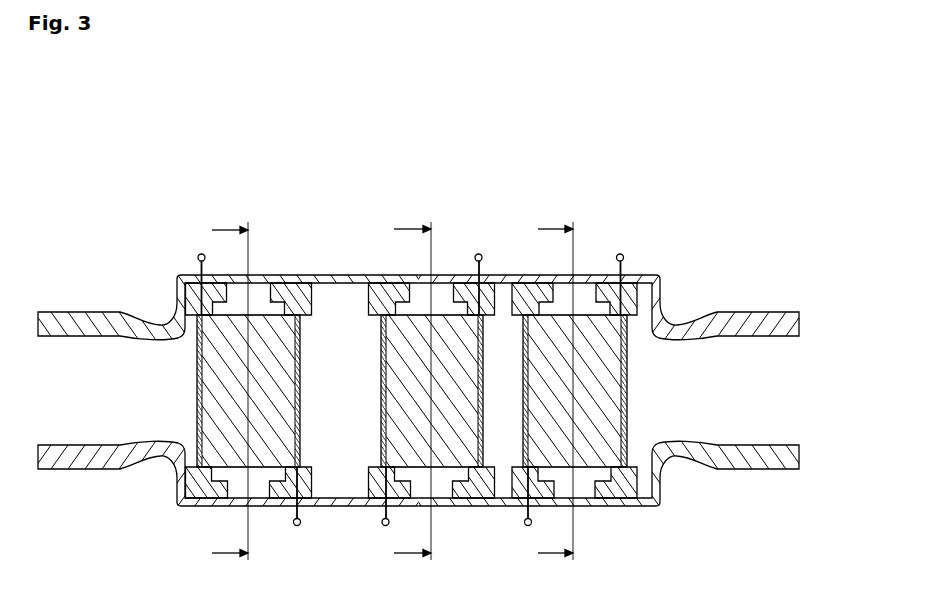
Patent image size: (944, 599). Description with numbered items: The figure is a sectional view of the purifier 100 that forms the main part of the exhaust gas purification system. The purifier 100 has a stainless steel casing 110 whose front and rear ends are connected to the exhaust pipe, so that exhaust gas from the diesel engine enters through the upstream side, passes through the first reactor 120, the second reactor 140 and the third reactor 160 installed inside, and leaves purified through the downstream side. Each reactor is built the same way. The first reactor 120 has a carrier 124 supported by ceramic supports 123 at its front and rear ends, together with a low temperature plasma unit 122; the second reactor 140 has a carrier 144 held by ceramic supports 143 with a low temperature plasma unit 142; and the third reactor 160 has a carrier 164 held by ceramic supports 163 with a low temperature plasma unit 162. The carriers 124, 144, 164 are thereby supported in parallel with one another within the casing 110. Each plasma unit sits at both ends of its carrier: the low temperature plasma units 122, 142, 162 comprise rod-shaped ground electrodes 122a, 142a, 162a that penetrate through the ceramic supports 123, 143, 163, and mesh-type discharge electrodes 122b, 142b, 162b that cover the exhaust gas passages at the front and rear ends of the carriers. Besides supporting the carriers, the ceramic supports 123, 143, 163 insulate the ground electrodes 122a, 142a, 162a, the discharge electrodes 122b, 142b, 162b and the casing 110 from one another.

The purifier 100 is at (758, 175).
The casing 110 is at (757, 466).
The first reactor 120 is at (178, 349).
The low temperature plasma unit 122 is at (108, 208).
The ground electrode 122a is at (199, 255).
The discharge electrode 122b is at (199, 314).
The ceramic support 123 is at (192, 485).
The carrier 124 is at (257, 470).
The second reactor 140 is at (369, 333).
The low temperature plasma unit 142 is at (507, 158).
The ground electrode 142a is at (475, 254).
The discharge electrode 142b is at (482, 314).
The ceramic support 143 is at (370, 482).
The carrier 144 is at (440, 470).
The third reactor 160 is at (648, 352).
The low temperature plasma unit 162 is at (655, 158).
The ground electrode 162a is at (617, 254).
The discharge electrode 162b is at (626, 314).
The ceramic support 163 is at (620, 492).
The carrier 164 is at (585, 480).